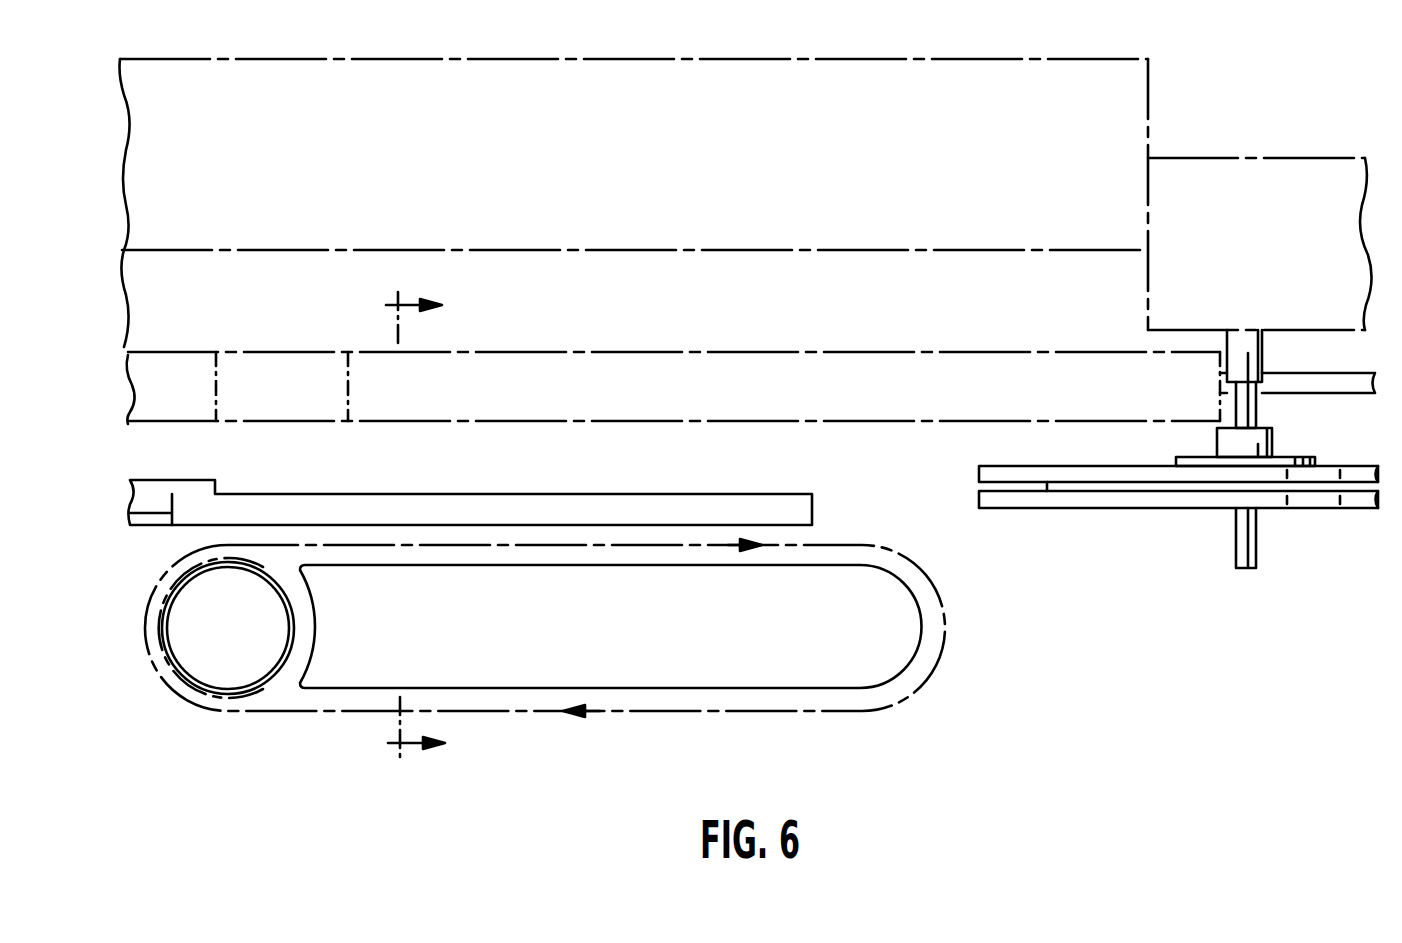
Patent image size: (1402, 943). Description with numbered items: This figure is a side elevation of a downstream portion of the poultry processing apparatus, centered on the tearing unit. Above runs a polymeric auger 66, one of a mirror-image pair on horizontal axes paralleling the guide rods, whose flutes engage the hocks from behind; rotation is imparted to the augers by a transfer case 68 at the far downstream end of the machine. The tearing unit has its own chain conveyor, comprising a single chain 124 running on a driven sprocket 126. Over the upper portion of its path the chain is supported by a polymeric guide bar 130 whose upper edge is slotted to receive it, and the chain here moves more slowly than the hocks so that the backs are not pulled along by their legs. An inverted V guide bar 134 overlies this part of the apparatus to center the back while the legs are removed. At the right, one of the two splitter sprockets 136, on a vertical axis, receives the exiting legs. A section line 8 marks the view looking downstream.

The section line 8- 8 is at (427, 525).
The polymeric auger 66 is at (957, 408).
The transfer case 68 is at (1263, 258).
The chain 124 is at (683, 712).
The driven sprocket 126 is at (243, 700).
The polymeric guide bar 130 is at (645, 636).
The inverted V guide bar 134 is at (574, 499).
The sprocket 136 is at (1133, 508).